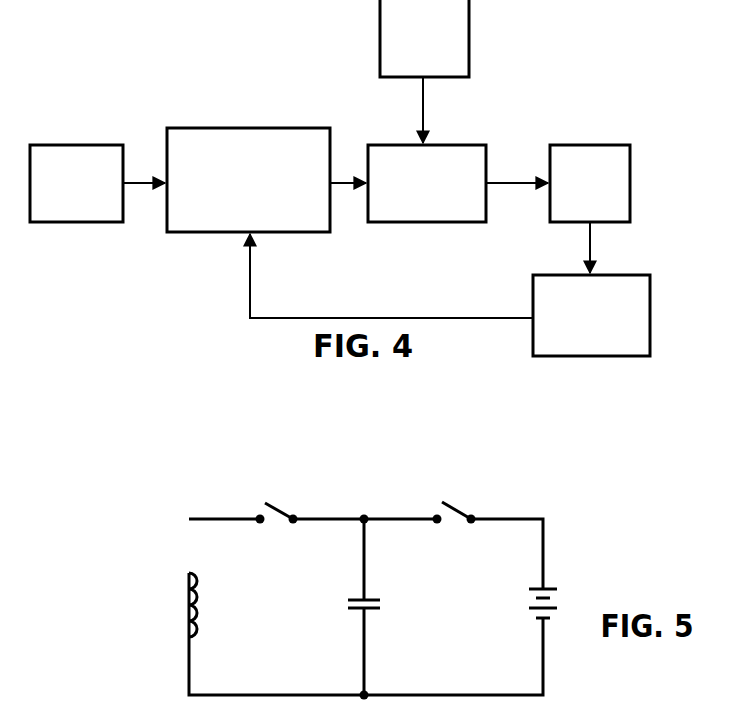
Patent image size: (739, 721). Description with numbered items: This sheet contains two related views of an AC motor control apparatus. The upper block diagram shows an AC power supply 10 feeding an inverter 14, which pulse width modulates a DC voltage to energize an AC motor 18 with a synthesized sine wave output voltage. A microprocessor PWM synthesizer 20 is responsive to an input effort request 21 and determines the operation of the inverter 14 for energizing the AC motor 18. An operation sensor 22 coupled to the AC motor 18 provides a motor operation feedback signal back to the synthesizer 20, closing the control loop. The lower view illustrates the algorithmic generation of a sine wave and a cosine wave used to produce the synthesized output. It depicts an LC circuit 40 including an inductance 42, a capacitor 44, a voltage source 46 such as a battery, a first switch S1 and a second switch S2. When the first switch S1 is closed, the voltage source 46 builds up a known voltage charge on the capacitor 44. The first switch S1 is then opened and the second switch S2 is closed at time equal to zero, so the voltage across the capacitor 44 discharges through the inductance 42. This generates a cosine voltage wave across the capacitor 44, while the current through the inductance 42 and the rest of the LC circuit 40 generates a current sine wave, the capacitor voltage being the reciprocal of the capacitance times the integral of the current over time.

In FIG. 4, the AC power supply 10 is at (469, 18).
In FIG. 4, the inverter 14 is at (458, 145).
In FIG. 4, the AC motor 18 is at (605, 145).
In FIG. 4, the microprocessor PWM synthesizer 20 is at (246, 128).
In FIG. 4, the effort request 21 is at (73, 145).
In FIG. 4, the operation sensor 22 is at (650, 312).
In FIG. 5, the LC circuit 40 is at (325, 585).
In FIG. 5, the inductance 42 is at (186, 600).
In FIG. 5, the capacitor 44 is at (349, 604).
In FIG. 5, the voltage source 46 is at (540, 613).
In FIG. 5, the first switch S1 is at (456, 504).
In FIG. 5, the second switch S2 is at (277, 504).